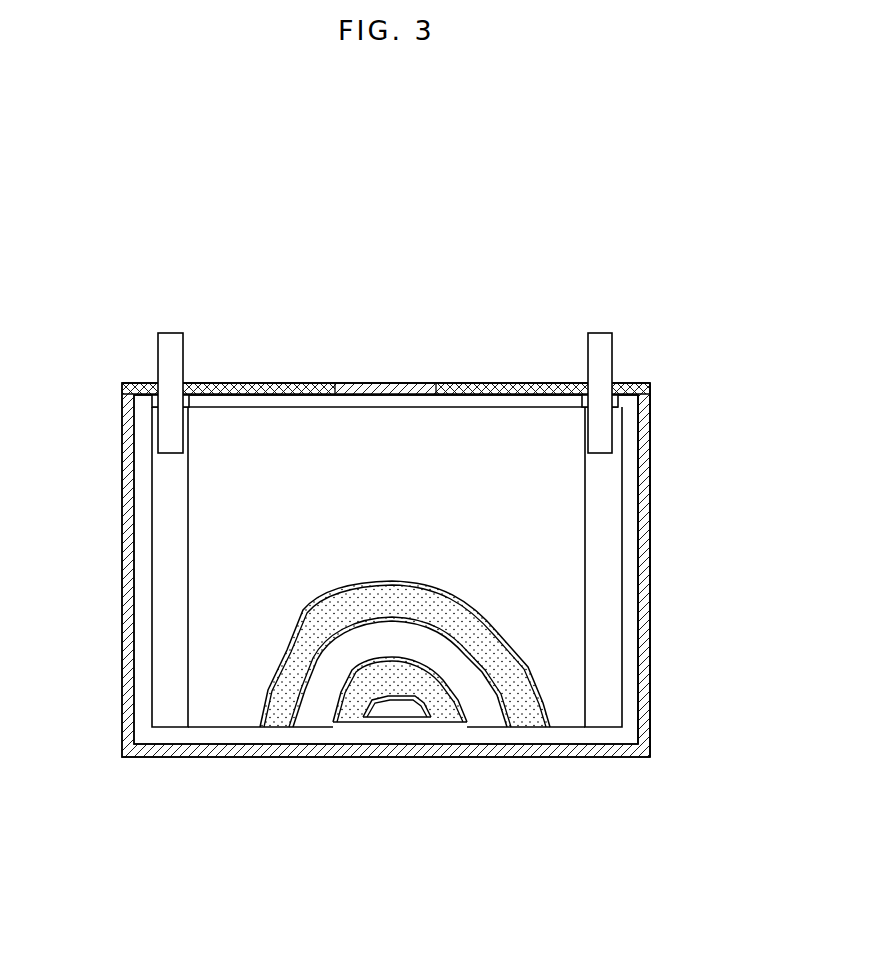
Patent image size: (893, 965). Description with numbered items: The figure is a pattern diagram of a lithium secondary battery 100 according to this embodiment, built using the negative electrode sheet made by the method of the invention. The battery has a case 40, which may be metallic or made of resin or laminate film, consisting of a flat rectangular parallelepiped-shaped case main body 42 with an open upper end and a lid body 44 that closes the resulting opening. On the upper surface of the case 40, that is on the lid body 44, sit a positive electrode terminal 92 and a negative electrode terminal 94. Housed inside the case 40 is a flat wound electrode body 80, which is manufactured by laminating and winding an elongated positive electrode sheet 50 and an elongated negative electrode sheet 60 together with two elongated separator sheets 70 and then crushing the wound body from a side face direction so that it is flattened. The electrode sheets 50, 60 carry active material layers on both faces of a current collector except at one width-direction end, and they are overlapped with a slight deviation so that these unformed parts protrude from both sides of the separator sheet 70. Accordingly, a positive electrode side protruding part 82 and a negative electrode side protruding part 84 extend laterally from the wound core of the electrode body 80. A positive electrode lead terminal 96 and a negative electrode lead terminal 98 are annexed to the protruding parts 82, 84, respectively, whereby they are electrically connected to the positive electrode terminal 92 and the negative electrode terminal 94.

The lithium secondary battery 100 is at (655, 296).
The case 40 is at (649, 658).
The case main body 42 is at (643, 527).
The lid body 44 is at (254, 387).
The positive electrode sheet 50 is at (233, 712).
The negative electrode sheet 60 is at (320, 712).
The separator sheet 70 is at (270, 727).
The wound electrode body 80 is at (503, 403).
The positive electrode side protruding part 82 is at (168, 600).
The negative electrode side protruding part 84 is at (607, 616).
The positive electrode terminal 92 is at (173, 345).
The negative electrode terminal 94 is at (599, 345).
The positive electrode lead terminal 96 is at (170, 440).
The negative electrode lead terminal 98 is at (593, 439).